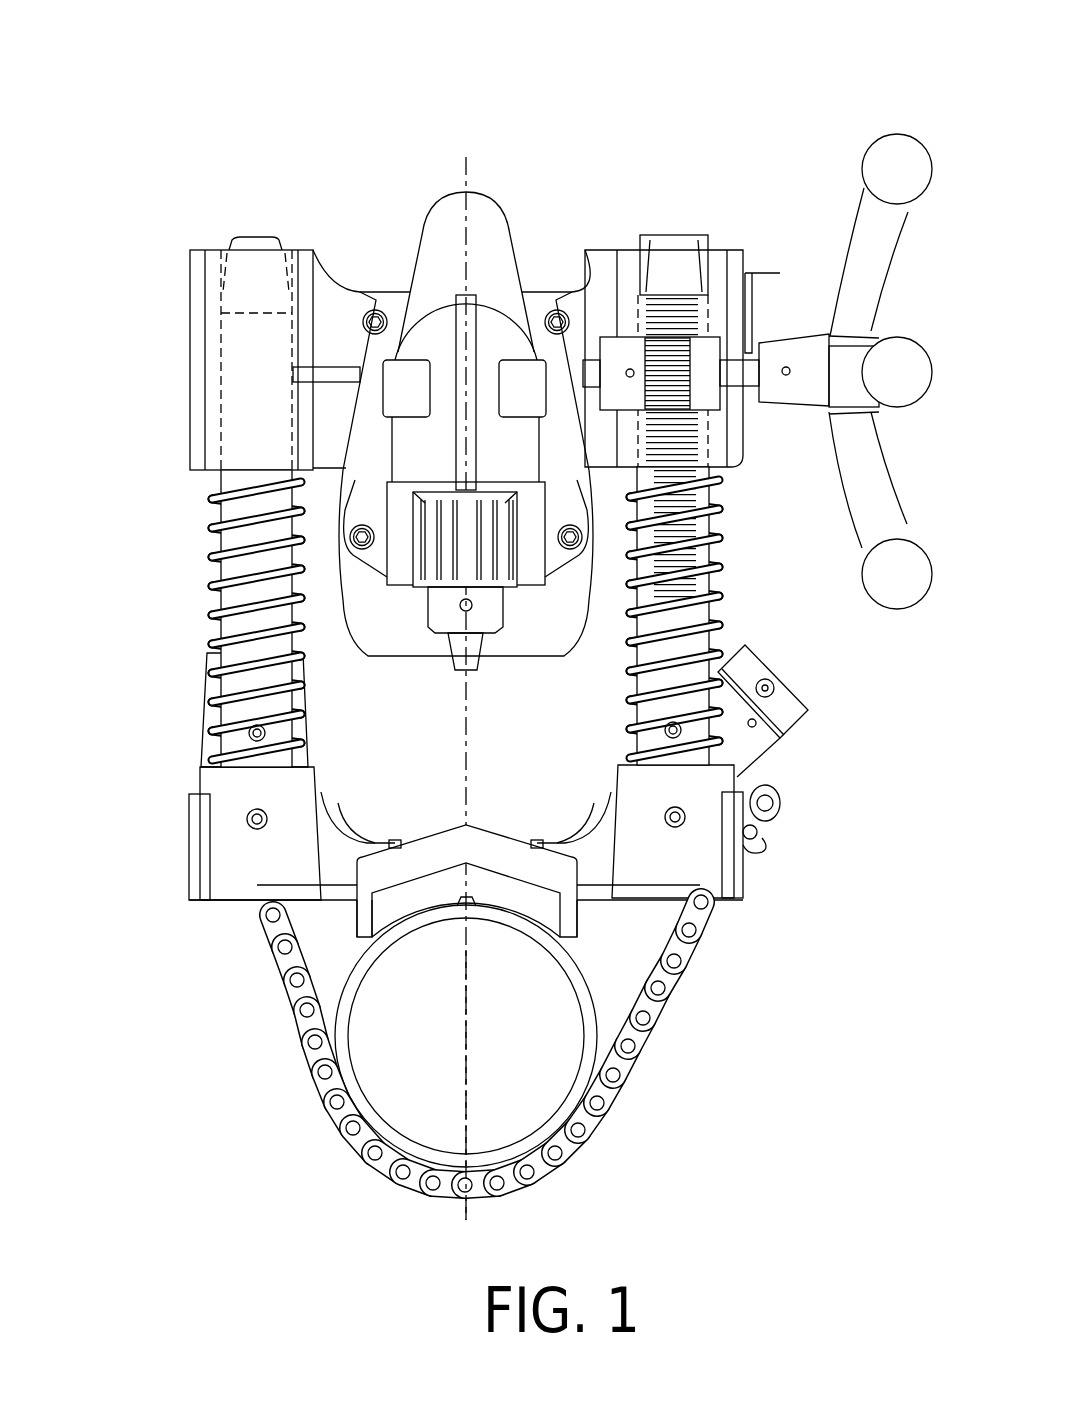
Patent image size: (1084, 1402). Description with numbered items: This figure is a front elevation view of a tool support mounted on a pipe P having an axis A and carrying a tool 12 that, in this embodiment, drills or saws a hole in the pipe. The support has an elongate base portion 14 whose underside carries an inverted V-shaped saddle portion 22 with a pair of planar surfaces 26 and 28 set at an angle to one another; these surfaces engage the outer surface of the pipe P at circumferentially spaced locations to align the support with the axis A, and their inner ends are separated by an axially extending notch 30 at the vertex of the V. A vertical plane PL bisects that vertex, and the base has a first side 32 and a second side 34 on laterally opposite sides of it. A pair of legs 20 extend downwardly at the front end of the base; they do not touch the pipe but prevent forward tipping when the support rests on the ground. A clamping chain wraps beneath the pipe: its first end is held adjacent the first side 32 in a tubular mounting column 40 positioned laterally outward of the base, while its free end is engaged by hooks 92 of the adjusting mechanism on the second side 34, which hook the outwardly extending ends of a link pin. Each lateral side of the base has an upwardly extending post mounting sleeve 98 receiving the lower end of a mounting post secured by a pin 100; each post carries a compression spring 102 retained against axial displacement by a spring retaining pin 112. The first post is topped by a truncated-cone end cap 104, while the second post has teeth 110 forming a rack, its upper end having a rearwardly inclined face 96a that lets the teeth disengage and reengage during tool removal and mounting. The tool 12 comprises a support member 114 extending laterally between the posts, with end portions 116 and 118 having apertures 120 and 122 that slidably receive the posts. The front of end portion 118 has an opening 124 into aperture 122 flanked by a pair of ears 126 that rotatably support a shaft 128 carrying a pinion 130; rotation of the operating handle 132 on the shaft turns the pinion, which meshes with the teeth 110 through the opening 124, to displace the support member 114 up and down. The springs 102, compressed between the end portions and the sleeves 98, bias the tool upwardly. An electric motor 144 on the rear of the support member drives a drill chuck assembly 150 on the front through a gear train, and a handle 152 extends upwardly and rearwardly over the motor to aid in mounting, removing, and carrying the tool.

The tool 12 is at (606, 236).
The elongate base portion 14 is at (529, 828).
The legs 20 is at (592, 941).
The saddle portion 22 is at (383, 930).
The planar surface 26 is at (407, 940).
The planar surface 28 is at (539, 940).
The axially extending notch 30 is at (472, 918).
The first side 32 is at (344, 924).
The second side 34 is at (592, 917).
The tubular mounting column 40 is at (193, 719).
The hooks 92 is at (772, 836).
The inclined face 96a is at (676, 220).
The post mounting sleeve 98 is at (230, 850).
The pin 100 is at (233, 816).
The compression spring 102 is at (471, 617).
The end cap 104 is at (220, 230).
The teeth 110 is at (704, 541).
The spring retaining pin 112 is at (277, 741).
The support member 114 is at (359, 276).
The end portion 116 is at (203, 320).
The end portion 118 is at (750, 243).
The aperture 120 is at (209, 412).
The aperture 122 is at (637, 256).
The opening 124 is at (705, 414).
The ears 126 is at (596, 321).
The shaft 128 is at (740, 375).
The pinion 130 is at (702, 327).
The operating handle 132 is at (889, 121).
The electric motor 144 is at (516, 672).
The drill chuck assembly 150 is at (398, 632).
The handle 152 is at (451, 178).
The pipe axis A is at (451, 1090).
The pipe P is at (613, 1033).
The vertical plane PL is at (478, 164).